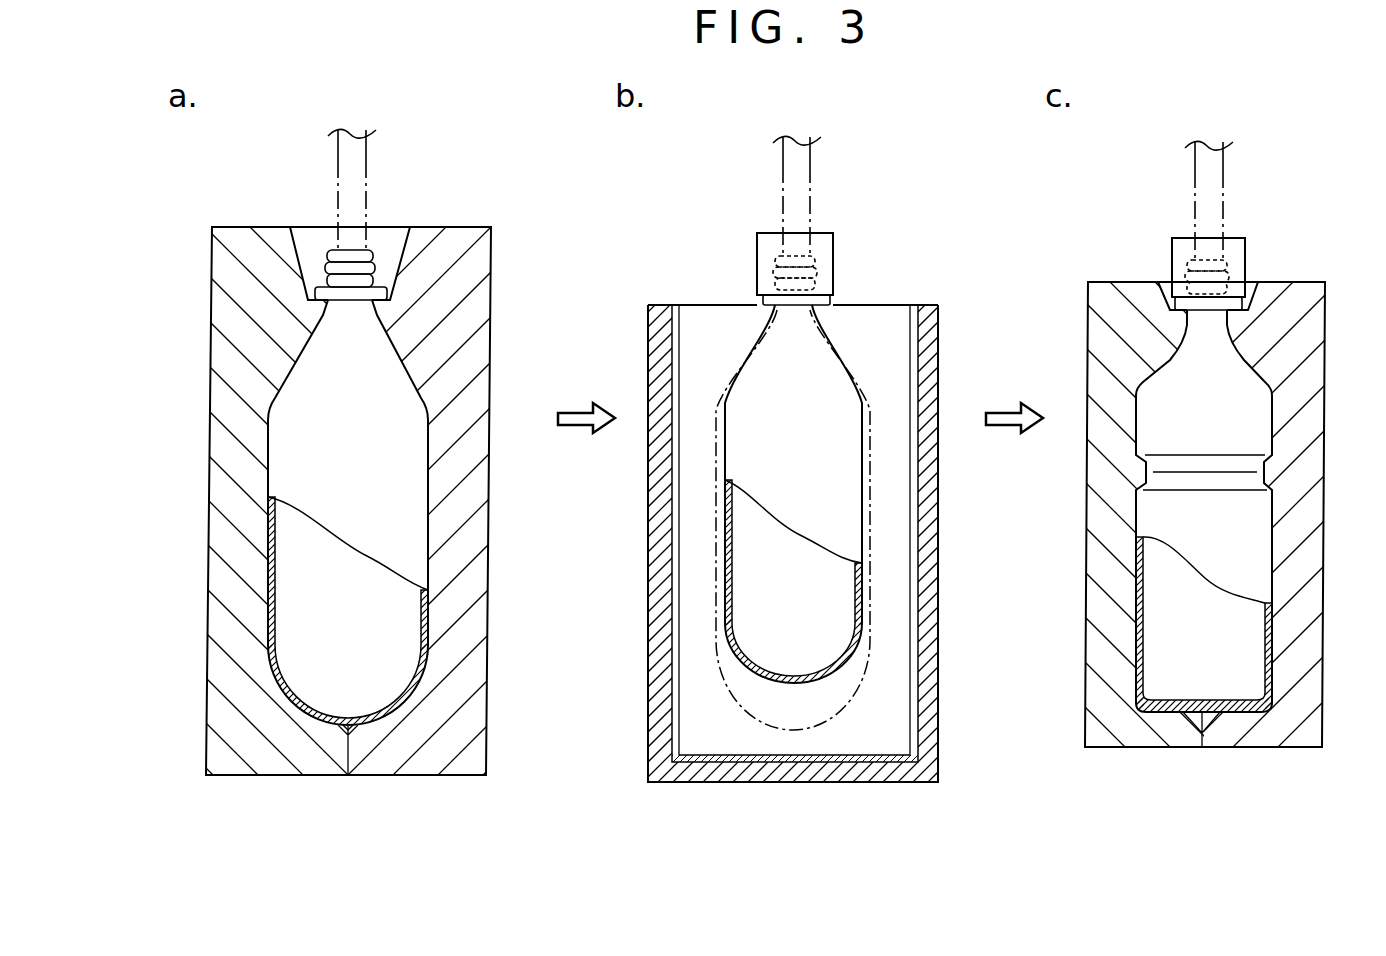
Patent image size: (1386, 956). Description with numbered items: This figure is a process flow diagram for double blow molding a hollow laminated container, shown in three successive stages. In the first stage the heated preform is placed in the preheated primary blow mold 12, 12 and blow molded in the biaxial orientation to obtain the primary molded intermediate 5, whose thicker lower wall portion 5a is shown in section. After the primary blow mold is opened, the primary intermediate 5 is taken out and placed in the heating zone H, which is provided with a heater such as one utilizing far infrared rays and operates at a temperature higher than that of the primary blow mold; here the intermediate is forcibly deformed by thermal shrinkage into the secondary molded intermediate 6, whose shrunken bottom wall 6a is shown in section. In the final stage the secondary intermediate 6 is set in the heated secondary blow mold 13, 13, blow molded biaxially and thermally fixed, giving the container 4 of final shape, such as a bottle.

The container 4 is at (1260, 405).
The primary molded intermediate 5 is at (290, 452).
The bottom portion of preform 5a is at (268, 625).
The secondary molded intermediate 6 is at (830, 393).
The bottom portion of intermediate molded article 6a is at (863, 610).
The primary blow mold 12 is at (268, 752).
The secondary blow mold 13 is at (1123, 728).
The heating zone H is at (731, 784).